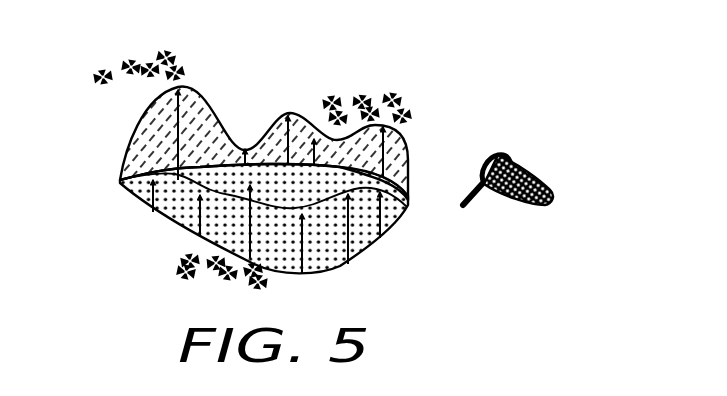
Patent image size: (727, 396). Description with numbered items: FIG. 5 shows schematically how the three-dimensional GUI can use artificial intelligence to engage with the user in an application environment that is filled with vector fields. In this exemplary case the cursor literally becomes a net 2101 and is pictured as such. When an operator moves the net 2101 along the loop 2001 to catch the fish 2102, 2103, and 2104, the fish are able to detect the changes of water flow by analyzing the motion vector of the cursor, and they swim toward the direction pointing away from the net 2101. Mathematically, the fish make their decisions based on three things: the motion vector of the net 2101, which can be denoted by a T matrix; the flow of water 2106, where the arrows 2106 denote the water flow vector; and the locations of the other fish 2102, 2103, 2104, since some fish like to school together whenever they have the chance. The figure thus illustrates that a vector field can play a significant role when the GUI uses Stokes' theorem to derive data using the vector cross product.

The loop 2001 is at (407, 206).
The flow of water 2106 is at (372, 251).
The net 2101 is at (533, 178).
The fish 2102 is at (359, 81).
The fish 2103 is at (120, 62).
The fish 2104 is at (180, 256).